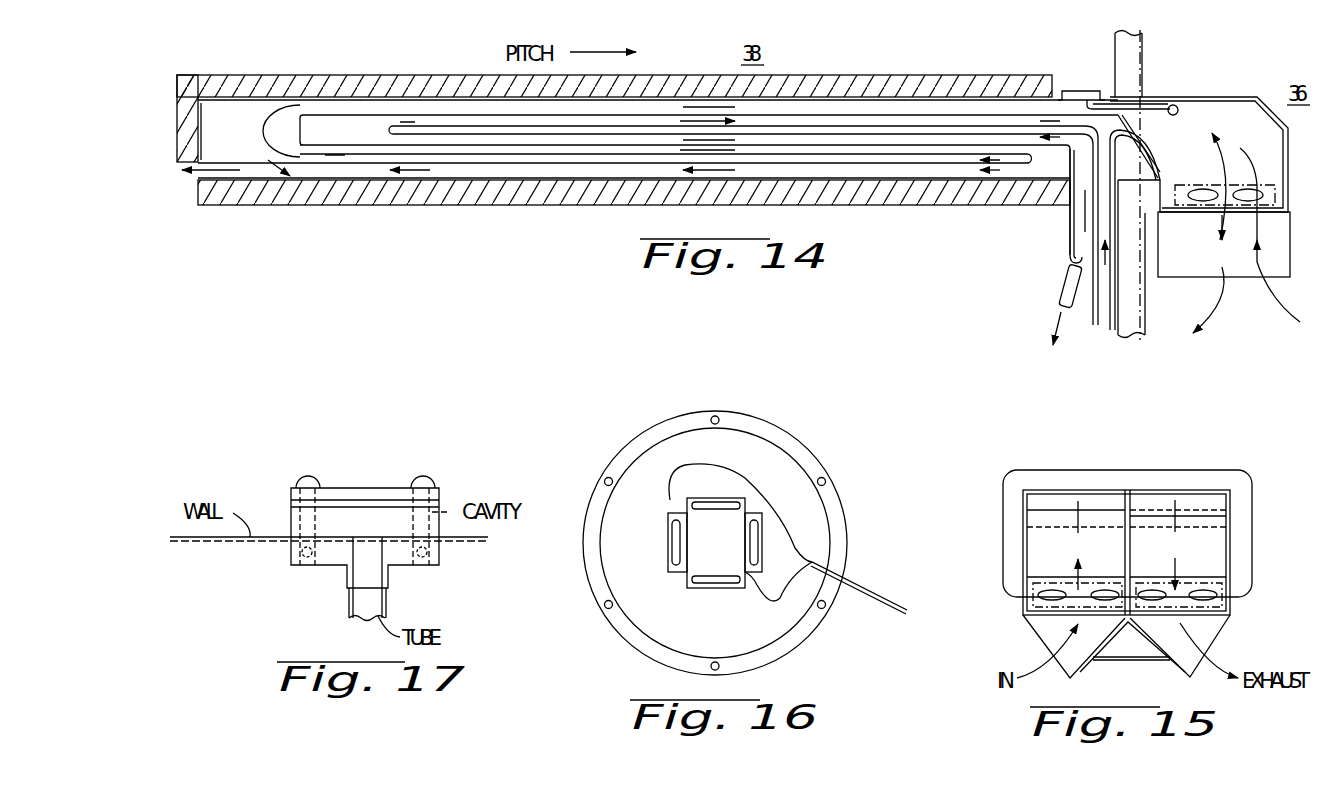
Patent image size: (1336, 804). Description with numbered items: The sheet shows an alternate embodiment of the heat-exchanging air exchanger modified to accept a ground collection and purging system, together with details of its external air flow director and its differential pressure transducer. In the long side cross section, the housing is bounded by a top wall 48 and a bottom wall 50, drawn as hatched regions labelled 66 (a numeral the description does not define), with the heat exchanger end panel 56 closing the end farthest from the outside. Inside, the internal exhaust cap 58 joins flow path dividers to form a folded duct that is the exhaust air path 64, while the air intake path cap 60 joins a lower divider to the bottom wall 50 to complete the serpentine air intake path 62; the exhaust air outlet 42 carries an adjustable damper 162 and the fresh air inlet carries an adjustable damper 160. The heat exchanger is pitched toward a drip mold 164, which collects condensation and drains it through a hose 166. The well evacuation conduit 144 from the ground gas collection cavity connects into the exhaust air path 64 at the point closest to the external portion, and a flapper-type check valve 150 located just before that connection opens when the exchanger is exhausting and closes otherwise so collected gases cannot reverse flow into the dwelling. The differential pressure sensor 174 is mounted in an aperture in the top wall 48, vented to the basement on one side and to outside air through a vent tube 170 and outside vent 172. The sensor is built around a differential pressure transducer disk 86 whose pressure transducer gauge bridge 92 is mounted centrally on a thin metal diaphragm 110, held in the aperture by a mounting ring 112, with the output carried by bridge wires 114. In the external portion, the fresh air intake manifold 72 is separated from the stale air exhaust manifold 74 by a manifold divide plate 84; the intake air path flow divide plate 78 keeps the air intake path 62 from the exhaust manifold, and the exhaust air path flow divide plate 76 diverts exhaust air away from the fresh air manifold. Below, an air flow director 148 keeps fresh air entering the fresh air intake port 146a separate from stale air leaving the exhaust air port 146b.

In FIG. 14, the exhaust air outlet 42 is at (192, 184).
In FIG. 14, the top wall 48 is at (236, 92).
In FIG. 14, the bottom wall 50 is at (263, 190).
In FIG. 14, the heat exchanger end panel 56 is at (204, 134).
In FIG. 14, the internal exhaust cap 58 is at (294, 124).
In FIG. 14, the air intake path cap 60 is at (1066, 151).
In FIG. 14, the air intake path 62 is at (376, 173).
In FIG. 15, the air intake path 62 is at (1038, 500).
In FIG. 14, the exhaust air path 64 is at (470, 140).
In FIG. 15, the exhaust air path 64 is at (1215, 517).
In FIG. 14, the insulation 66 is at (358, 86).
In FIG. 15, the fresh air intake manifold 72 is at (1055, 552).
In FIG. 15, the stale air exhaust manifold 74 is at (1212, 563).
In FIG. 15, the exhaust air path flow divide plate 76 is at (1040, 520).
In FIG. 15, the intake air path flow divide plate 78 is at (1215, 503).
In FIG. 15, the manifold divide plate 84 is at (1131, 492).
In FIG. 17, the differential pressure transducer disk 86 is at (362, 478).
In FIG. 16, the differential pressure transducer disk 86 is at (838, 432).
In FIG. 16, the pressure transducer gauge bridge 92 is at (668, 548).
In FIG. 16, the thin metal diaphragm 110 is at (681, 449).
In FIG. 16, the mounting ring 112 is at (838, 516).
In FIG. 16, the bridge wires 114 is at (866, 591).
In FIG. 14, the well evacuation conduit 144 is at (1100, 313).
In FIG. 15, the fresh air intake port 146a is at (1050, 630).
In FIG. 15, the exhaust air port 146b is at (1207, 626).
In FIG. 14, the air flow director 148 is at (1278, 250).
In FIG. 15, the air flow director 148 is at (1148, 689).
In FIG. 14, the check valve 150 is at (1058, 127).
In FIG. 14, the adjustable damper 160 is at (268, 160).
In FIG. 14, the adjustable damper 162 is at (1062, 192).
In FIG. 14, the drip mold 164 is at (1066, 259).
In FIG. 14, the hose 166 is at (1060, 289).
In FIG. 14, the vent tube 170 is at (1152, 103).
In FIG. 17, the vent tube 170 is at (350, 601).
In FIG. 14, the outside vent 172 is at (1180, 104).
In FIG. 14, the differential pressure sensor 174 is at (1080, 91).
In FIG. 17, the differential pressure sensor 174 is at (508, 585).